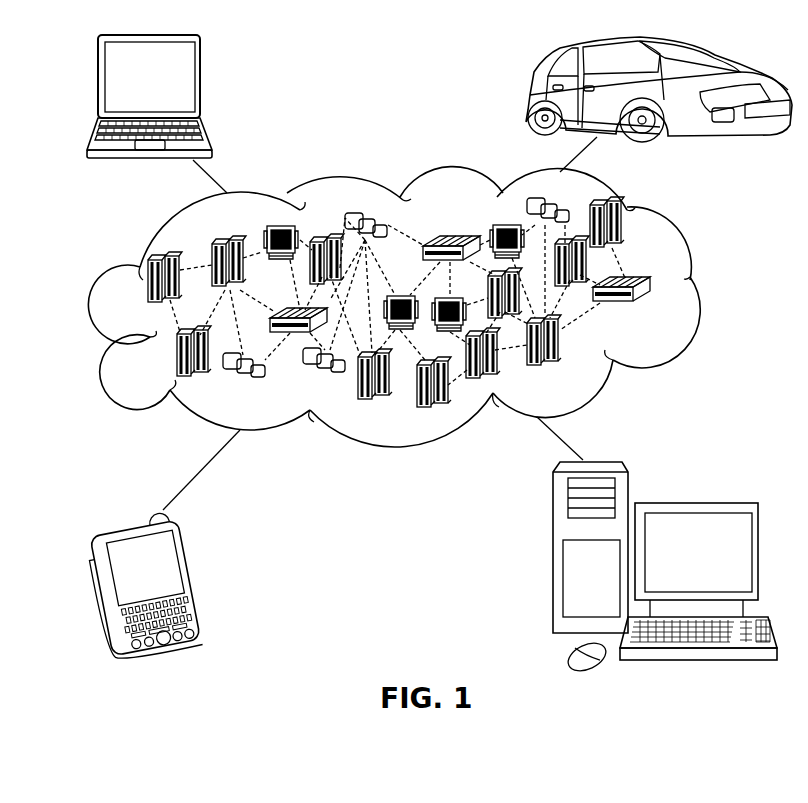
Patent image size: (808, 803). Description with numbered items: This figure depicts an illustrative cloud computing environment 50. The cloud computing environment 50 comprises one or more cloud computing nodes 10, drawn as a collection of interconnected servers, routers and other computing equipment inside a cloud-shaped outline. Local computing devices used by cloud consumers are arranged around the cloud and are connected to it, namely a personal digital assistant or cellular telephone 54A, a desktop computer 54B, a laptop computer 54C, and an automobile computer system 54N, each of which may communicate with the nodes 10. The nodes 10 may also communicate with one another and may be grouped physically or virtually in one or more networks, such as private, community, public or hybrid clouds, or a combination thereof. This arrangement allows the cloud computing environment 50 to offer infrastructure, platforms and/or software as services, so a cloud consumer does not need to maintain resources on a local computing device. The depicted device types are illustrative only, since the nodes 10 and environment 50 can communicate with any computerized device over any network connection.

The cloud computing node 10 is at (650, 307).
The cloud computing environment 50 is at (697, 290).
The personal digital assistant or cellular telephone 54A is at (195, 577).
The desktop computer 54B is at (693, 503).
The laptop computer 54C is at (203, 82).
The automobile computer system 54N is at (532, 92).